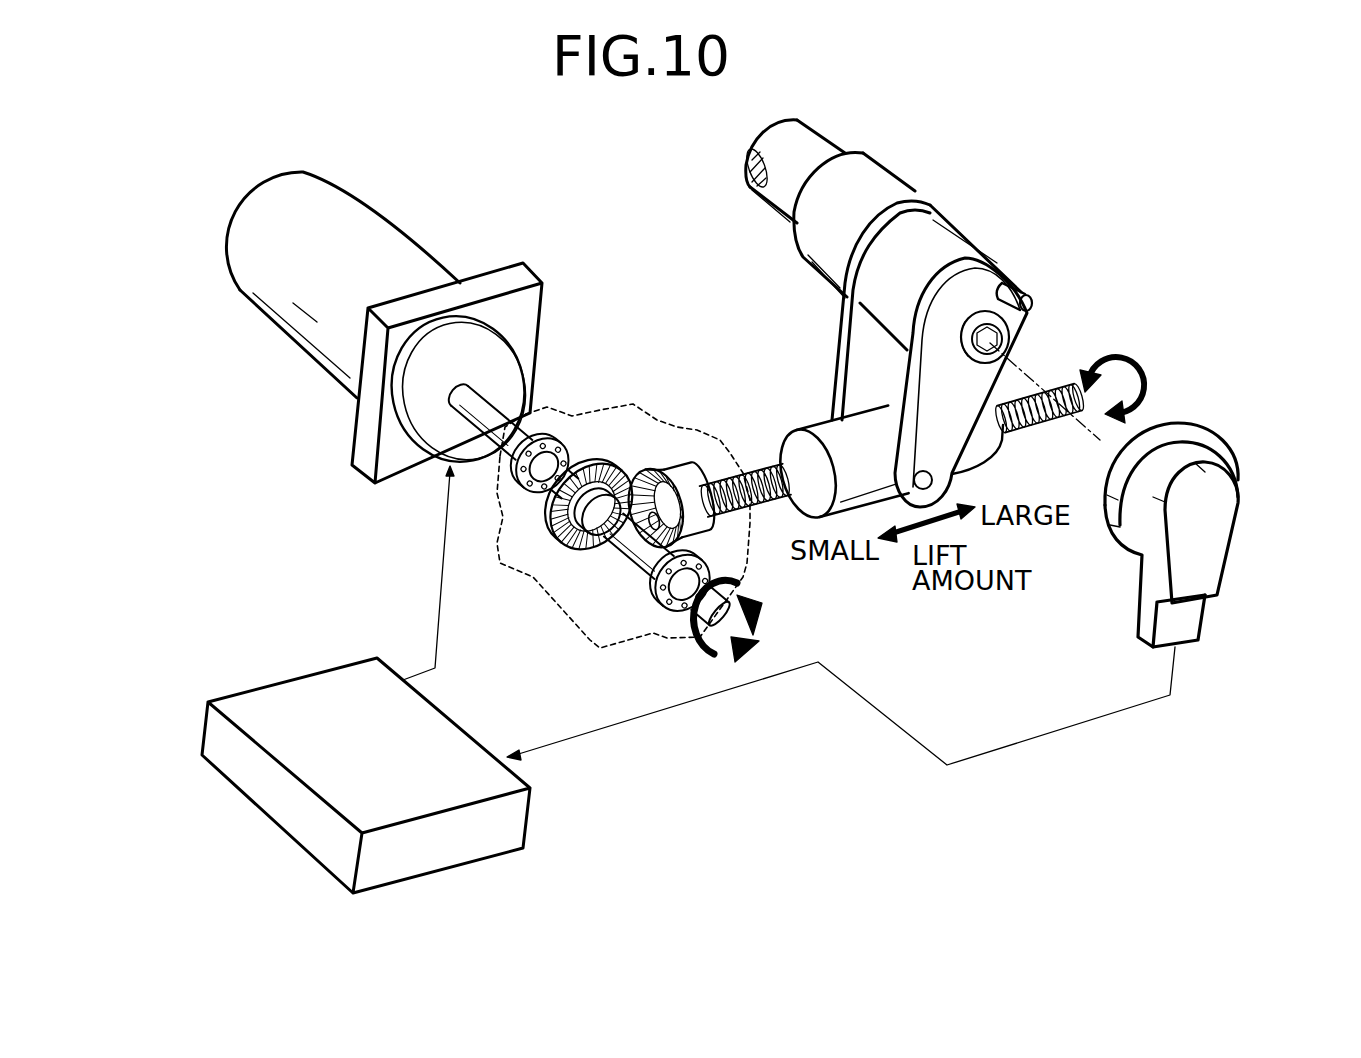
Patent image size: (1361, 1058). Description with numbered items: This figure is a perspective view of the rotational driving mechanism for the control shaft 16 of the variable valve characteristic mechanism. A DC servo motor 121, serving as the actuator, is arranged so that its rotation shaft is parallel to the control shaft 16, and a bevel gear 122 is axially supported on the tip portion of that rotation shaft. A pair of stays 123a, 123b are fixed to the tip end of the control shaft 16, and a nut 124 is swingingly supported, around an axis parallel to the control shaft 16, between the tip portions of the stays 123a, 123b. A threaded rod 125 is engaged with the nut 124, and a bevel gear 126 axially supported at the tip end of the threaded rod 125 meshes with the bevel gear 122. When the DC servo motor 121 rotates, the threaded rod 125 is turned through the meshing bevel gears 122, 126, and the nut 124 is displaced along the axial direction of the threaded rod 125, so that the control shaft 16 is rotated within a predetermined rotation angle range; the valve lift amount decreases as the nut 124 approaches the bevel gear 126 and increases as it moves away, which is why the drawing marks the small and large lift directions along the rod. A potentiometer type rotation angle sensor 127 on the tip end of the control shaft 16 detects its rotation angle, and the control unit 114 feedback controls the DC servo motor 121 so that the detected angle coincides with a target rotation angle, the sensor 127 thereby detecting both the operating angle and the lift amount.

The control shaft 16 is at (770, 188).
The control unit 114 is at (236, 772).
The DC servo motor 121 is at (388, 243).
The bevel gear 122 is at (605, 455).
The stay 123a is at (840, 332).
The stay 123b is at (1023, 335).
The nut 124 is at (820, 412).
The threaded rod 125 is at (772, 502).
The bevel gear 126 is at (673, 457).
The rotation angle sensor 127 is at (1222, 458).